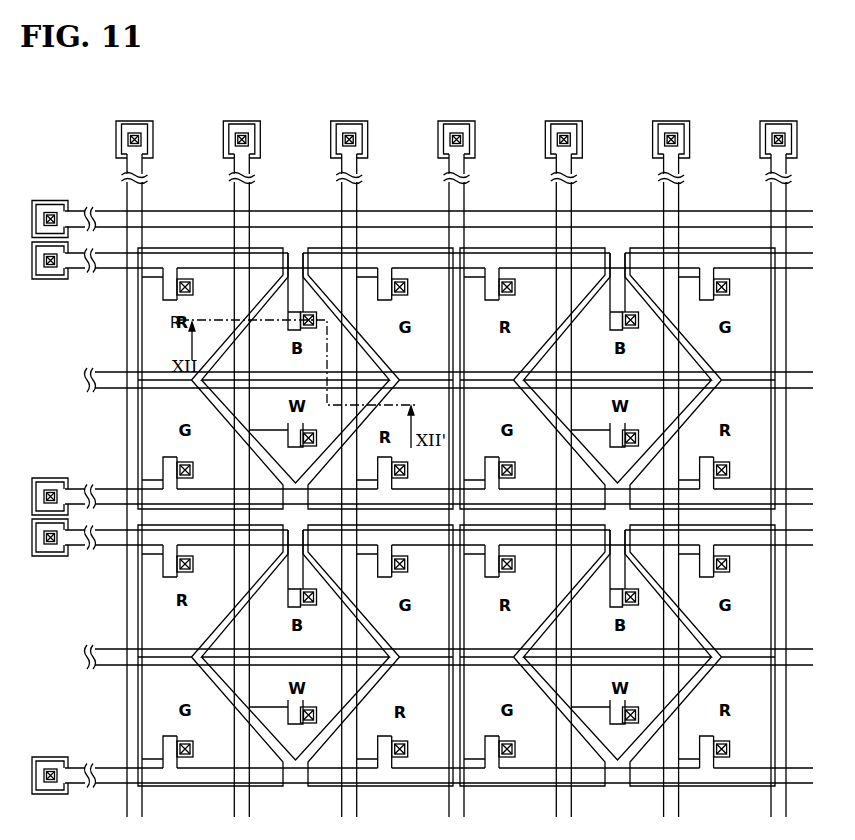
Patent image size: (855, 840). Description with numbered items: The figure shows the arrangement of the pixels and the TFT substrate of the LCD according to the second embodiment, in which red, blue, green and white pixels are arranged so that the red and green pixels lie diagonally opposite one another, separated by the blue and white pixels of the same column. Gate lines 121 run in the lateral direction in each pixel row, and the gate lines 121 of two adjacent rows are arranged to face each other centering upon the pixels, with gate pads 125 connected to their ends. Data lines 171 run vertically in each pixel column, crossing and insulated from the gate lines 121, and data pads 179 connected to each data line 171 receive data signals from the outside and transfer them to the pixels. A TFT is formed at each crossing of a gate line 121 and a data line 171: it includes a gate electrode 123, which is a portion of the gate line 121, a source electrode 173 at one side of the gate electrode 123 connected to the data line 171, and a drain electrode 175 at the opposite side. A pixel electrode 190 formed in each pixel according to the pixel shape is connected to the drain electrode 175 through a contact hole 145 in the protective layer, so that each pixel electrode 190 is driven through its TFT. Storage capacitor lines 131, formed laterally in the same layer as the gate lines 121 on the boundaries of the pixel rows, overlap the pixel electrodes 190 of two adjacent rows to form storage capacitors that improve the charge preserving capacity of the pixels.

The data pad 179 is at (385, 107).
The data line 171 is at (388, 163).
The pixel electrode 190 is at (395, 192).
The gate line 121 is at (74, 572).
The gate pad 125 is at (33, 478).
The storage capacitor line 131 is at (97, 612).
The source electrode 173 is at (153, 298).
The drain electrode 175 is at (192, 295).
The contact hole 145 is at (193, 280).
The gate electrode 123 is at (165, 308).